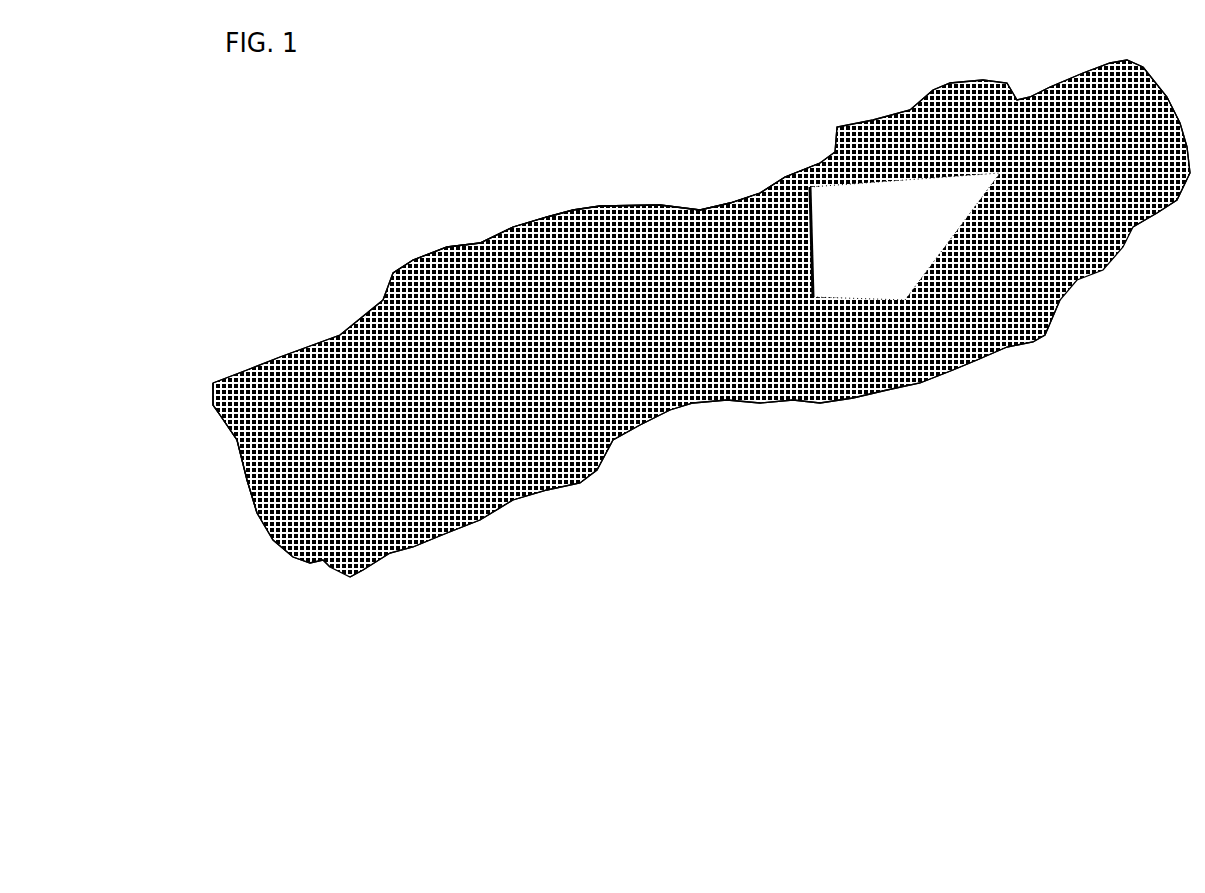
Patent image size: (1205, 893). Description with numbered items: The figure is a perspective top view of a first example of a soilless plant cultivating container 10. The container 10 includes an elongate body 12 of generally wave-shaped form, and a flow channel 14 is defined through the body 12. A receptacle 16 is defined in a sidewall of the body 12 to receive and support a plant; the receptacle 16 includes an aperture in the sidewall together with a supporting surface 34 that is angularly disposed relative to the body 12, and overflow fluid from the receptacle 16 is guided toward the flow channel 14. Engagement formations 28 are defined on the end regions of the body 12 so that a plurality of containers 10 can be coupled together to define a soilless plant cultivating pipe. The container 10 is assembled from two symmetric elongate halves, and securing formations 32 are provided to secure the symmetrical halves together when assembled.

The soilless plant cultivating container 10 is at (532, 605).
The elongate body 12 is at (620, 340).
The flow channel 14 is at (283, 507).
The receptacle 16 is at (803, 283).
The engagement formations 28 is at (317, 408).
The securing formations 32 is at (423, 258).
The supporting surface 34 is at (893, 243).